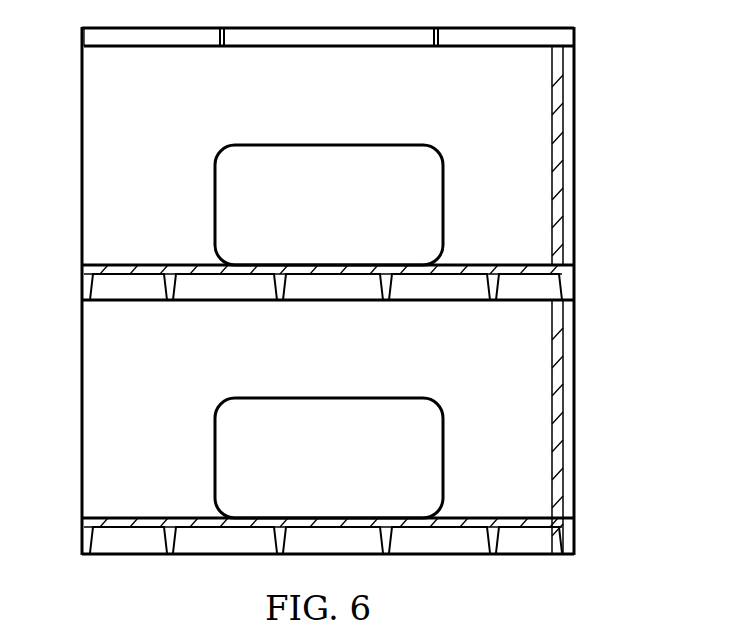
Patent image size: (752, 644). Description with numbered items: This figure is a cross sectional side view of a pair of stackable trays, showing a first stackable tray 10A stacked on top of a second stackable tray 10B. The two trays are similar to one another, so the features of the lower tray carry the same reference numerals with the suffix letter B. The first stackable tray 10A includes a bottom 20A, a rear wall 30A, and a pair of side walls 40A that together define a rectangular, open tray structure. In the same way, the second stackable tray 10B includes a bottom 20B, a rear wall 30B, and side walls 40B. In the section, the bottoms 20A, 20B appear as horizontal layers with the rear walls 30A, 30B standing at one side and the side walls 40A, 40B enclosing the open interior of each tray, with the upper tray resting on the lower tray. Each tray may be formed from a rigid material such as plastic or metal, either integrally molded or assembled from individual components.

The first stackable tray 10A is at (620, 84).
The second stackable tray 10B is at (626, 329).
The bottom 20A is at (325, 265).
The bottom 20B is at (333, 518).
The rear wall 30A is at (558, 172).
The rear wall 30B is at (558, 414).
The side walls 40A is at (351, 103).
The side walls 40B is at (351, 356).